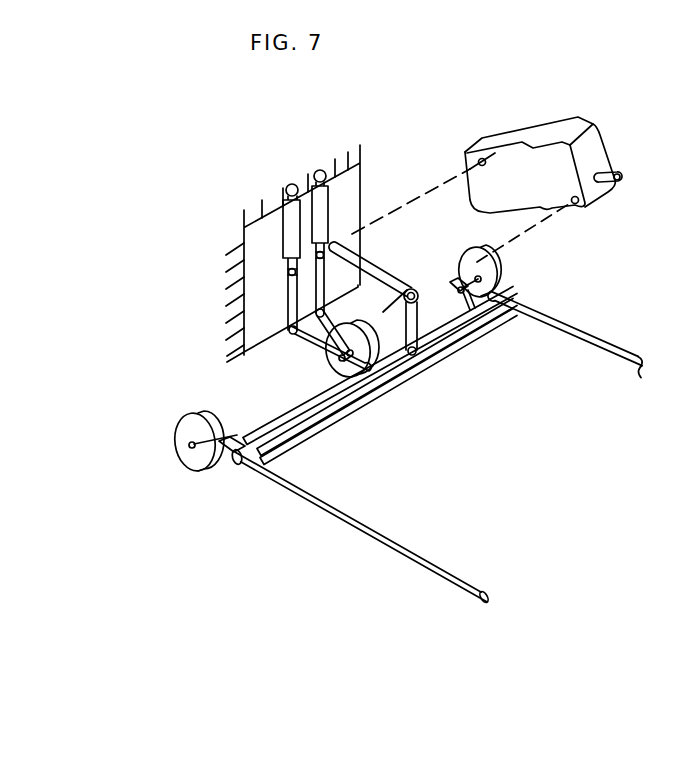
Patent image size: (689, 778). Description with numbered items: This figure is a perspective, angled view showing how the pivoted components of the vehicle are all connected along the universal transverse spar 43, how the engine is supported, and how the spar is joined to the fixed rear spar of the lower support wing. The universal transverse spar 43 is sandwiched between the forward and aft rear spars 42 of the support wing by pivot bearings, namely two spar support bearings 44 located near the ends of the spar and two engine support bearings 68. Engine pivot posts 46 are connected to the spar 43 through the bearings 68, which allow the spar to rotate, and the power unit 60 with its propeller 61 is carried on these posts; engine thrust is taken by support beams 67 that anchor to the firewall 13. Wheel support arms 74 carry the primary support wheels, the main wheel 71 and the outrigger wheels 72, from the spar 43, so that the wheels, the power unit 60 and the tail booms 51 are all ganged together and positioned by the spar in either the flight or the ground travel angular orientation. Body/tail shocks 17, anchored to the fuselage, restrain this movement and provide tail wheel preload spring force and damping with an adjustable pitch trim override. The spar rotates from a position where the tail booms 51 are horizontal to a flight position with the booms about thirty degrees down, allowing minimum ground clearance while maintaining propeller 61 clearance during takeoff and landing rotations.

The firewall 13 is at (352, 197).
The body/tail shock 17 is at (292, 228).
The power unit 60 is at (288, 268).
The propeller 61 is at (623, 173).
The support beam 67 is at (372, 258).
The engine pivot post 46 is at (420, 340).
The engine support bearing 68 is at (333, 385).
The main wheel 71 is at (386, 367).
The rear spar 42 is at (317, 400).
The spar support bearing 44 is at (457, 327).
The outrigger wheel 72 is at (503, 265).
The wheel support arm 74 is at (458, 282).
The universal transverse spar 43 is at (238, 462).
The tail boom 51 is at (393, 545).